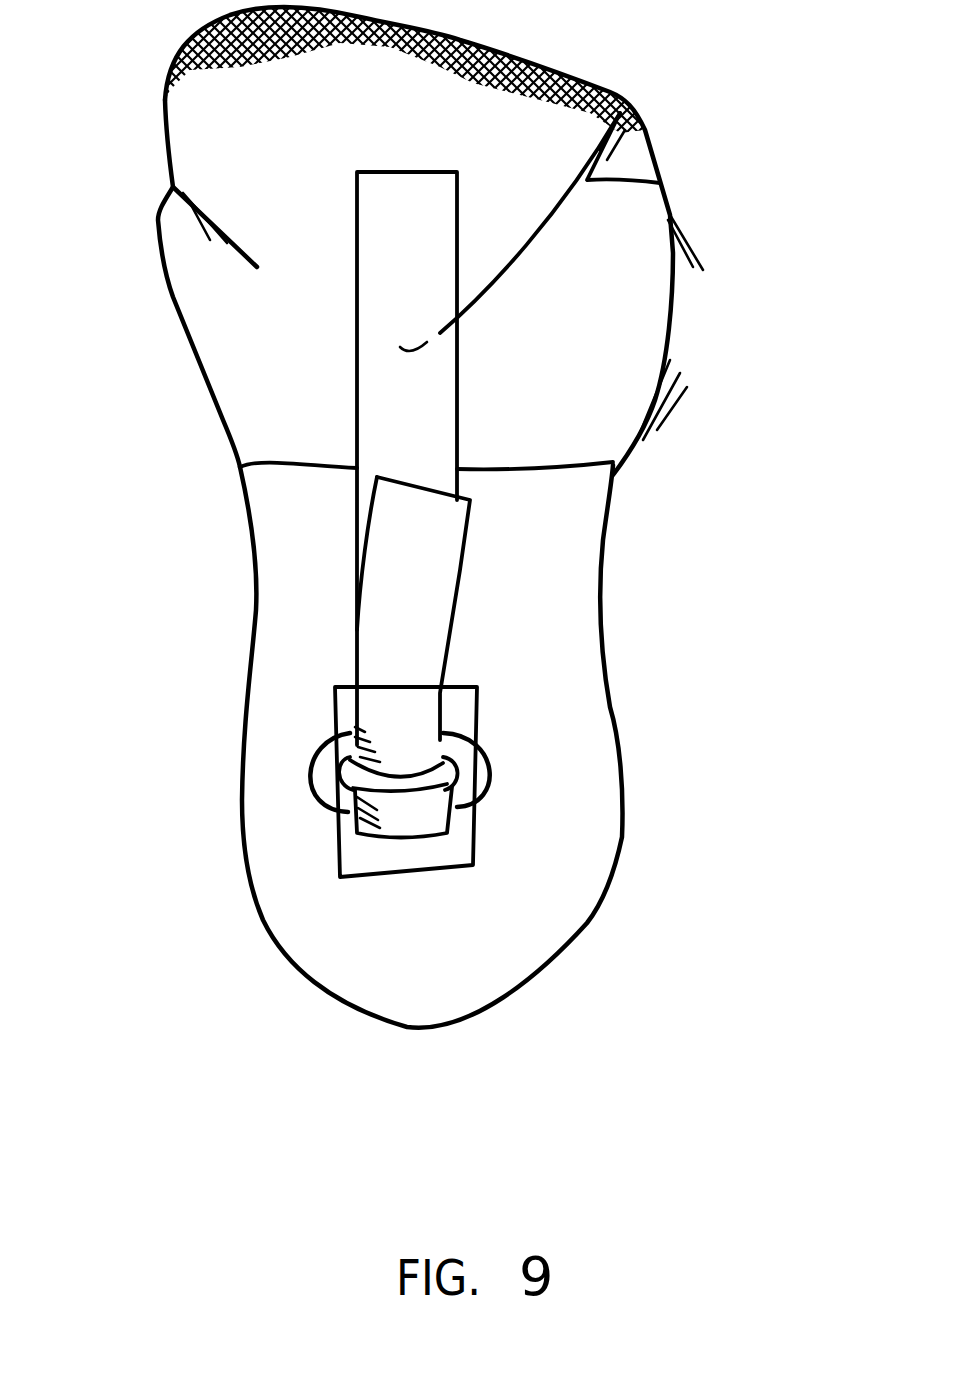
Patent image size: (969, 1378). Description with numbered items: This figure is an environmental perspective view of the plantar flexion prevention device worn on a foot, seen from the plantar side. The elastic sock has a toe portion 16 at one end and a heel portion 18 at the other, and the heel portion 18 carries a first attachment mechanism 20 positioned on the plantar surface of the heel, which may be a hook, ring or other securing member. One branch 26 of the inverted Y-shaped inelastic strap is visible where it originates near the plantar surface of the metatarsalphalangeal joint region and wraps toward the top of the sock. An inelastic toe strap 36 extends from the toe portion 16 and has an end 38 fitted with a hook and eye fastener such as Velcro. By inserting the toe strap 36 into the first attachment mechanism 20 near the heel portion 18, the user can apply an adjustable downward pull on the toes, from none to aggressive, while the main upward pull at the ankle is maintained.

The toe portion 16 is at (380, 343).
The heel portion 18 is at (320, 997).
The first attachment mechanism 20 is at (487, 765).
The branch 26 is at (690, 235).
The inelastic toe strap 36 is at (456, 437).
The end 38 is at (457, 570).